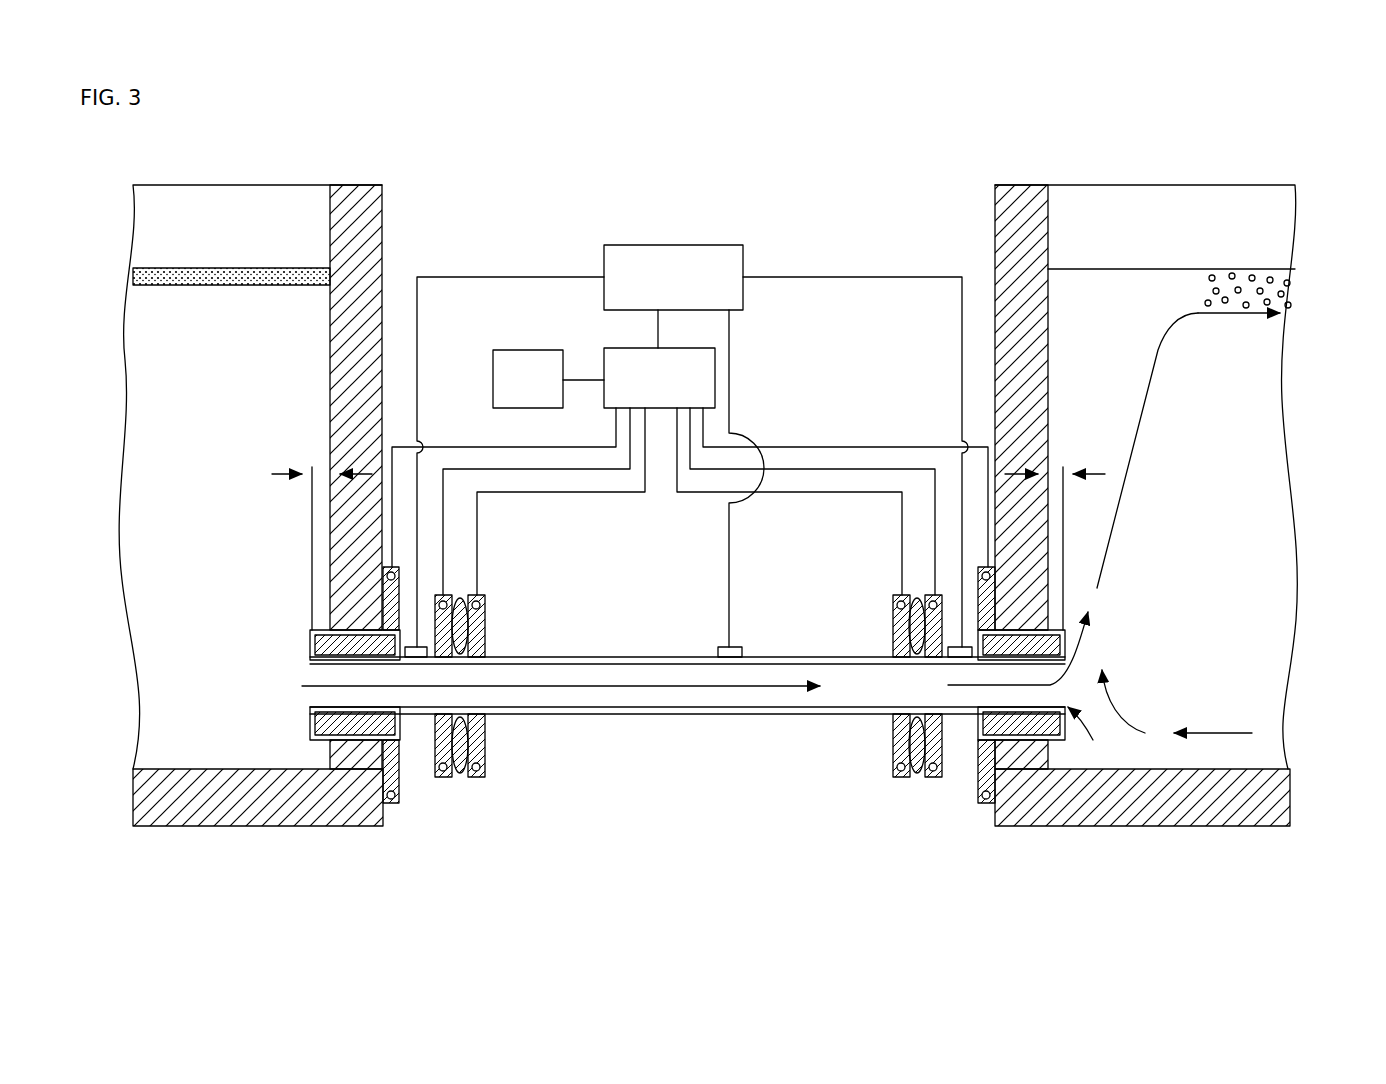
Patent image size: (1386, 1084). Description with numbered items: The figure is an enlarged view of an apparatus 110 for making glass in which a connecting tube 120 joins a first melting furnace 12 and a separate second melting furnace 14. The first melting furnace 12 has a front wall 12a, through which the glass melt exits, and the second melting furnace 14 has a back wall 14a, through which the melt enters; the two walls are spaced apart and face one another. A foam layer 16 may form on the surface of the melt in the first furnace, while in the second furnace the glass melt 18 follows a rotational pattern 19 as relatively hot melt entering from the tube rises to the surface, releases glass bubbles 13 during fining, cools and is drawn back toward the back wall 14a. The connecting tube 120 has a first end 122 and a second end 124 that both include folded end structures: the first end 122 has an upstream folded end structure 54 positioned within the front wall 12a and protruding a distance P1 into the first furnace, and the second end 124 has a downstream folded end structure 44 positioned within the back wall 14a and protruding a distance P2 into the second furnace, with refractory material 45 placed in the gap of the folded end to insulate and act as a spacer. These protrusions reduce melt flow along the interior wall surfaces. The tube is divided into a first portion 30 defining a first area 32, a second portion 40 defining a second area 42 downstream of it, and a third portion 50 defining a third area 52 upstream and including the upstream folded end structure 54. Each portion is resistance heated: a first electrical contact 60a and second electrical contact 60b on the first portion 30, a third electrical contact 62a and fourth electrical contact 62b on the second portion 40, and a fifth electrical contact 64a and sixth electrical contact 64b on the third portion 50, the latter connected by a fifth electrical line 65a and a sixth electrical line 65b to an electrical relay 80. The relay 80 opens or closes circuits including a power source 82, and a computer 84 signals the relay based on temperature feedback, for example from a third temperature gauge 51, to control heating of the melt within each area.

The first melting furnace 12 is at (172, 847).
The front wall 12a is at (385, 205).
The second melting furnace 14 is at (1232, 832).
The back wall 14a is at (995, 215).
The glass bubbles 13 is at (1238, 280).
The foam layer 16 is at (225, 268).
The glass melt 18 is at (180, 405).
The rotational pattern 19 is at (1198, 313).
The first portion 30 is at (630, 715).
The first area 32 is at (578, 672).
The second portion 40 is at (960, 788).
The second area 42 is at (958, 694).
The downstream folded end structure 44 is at (1075, 612).
The refractory material 45 is at (1060, 653).
The third portion 50 is at (417, 788).
The third temperature gauge 51 is at (432, 653).
The third area 52 is at (345, 678).
The upstream folded end structure 54 is at (298, 655).
The first electrical contact 60a is at (480, 778).
The second electrical contact 60b is at (902, 778).
The third electrical contact 62a is at (930, 778).
The fourth electrical contact 62b is at (987, 803).
The fifth electrical contact 64a is at (440, 778).
The sixth electrical contact 64b is at (390, 803).
The fifth electrical line 65a is at (440, 447).
The sixth electrical line 65b is at (445, 548).
The electrical relay 80 is at (715, 375).
The power source 82 is at (533, 350).
The computer 84 is at (668, 245).
The apparatus 110 is at (818, 172).
The connecting tube 120 is at (720, 788).
The first end 122 is at (300, 711).
The second end 124 is at (1100, 687).
The protrusion distance P1 is at (278, 470).
The protrusion distance P2 is at (1075, 470).